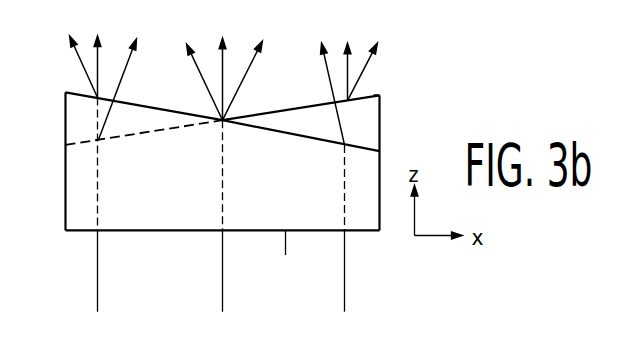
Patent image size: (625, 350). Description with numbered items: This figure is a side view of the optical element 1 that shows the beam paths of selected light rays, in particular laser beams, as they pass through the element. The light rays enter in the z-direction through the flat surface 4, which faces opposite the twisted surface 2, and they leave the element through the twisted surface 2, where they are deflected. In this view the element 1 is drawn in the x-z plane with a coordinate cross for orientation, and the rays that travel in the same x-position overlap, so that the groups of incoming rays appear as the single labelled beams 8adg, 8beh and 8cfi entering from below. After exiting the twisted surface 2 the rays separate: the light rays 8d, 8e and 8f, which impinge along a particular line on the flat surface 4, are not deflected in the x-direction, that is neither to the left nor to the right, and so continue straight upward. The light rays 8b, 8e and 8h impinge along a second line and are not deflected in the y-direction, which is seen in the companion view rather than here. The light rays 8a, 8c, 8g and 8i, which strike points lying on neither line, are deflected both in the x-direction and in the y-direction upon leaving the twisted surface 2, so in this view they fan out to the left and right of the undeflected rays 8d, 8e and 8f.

The body 1 is at (46, 195).
The twisted surface 2 is at (361, 134).
The flat surface 4 is at (284, 262).
The light ray 8a is at (75, 53).
The light ray 8b is at (186, 58).
The light ray 8c is at (326, 79).
The light ray 8d is at (90, 59).
The light ray 8e is at (226, 64).
The light ray 8f is at (340, 59).
The light ray 8g is at (121, 74).
The light ray 8h is at (246, 54).
The light ray 8i is at (372, 58).
The light beam group 8adg is at (86, 269).
The light beam group 8beh is at (210, 269).
The light beam group 8cfi is at (338, 270).